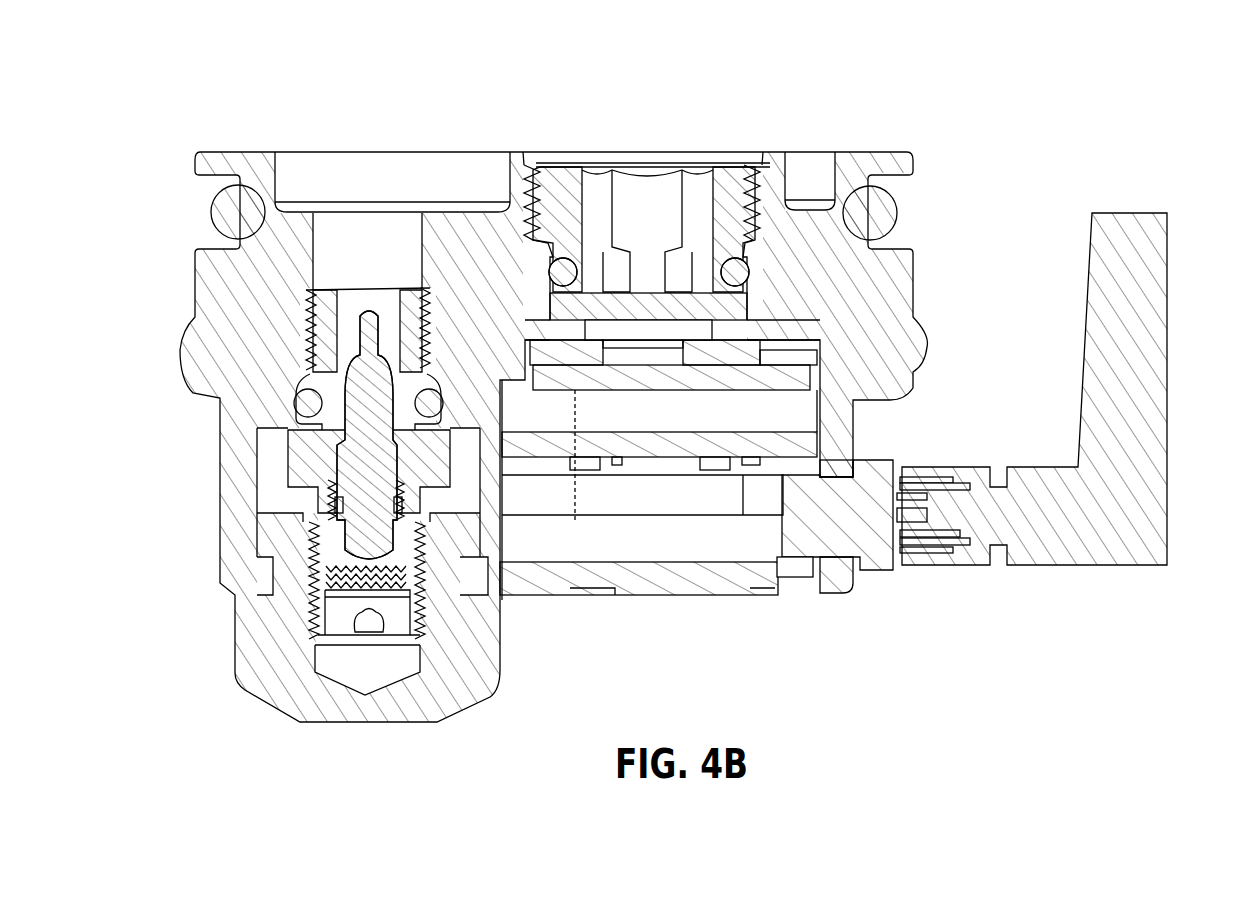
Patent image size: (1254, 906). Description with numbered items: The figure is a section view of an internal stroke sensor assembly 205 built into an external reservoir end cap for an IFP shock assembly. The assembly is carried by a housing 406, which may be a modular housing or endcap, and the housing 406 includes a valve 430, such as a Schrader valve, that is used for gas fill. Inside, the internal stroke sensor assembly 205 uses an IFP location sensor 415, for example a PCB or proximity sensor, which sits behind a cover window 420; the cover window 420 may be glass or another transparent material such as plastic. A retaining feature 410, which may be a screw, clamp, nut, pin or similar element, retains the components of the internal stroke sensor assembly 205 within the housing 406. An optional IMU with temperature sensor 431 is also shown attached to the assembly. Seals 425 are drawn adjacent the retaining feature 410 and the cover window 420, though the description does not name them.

The internal stroke sensor assembly 205 is at (256, 66).
The housing 406 is at (184, 349).
The retaining feature 410 is at (693, 188).
The IFP location sensor 415 is at (783, 374).
The cover window 420 is at (730, 298).
The O-ring 425 is at (742, 270).
The valve 430 is at (252, 685).
The IMU with temperature sensor 431 is at (1150, 540).